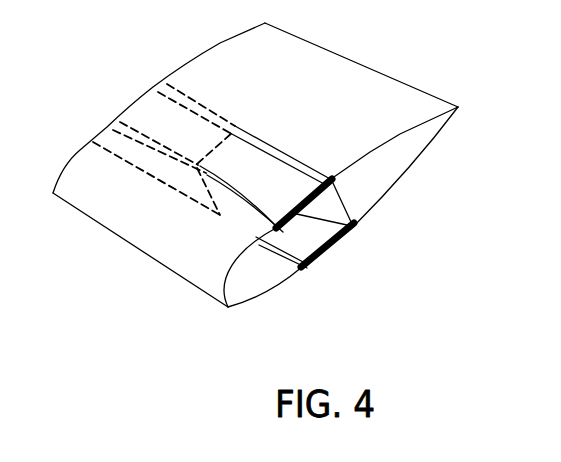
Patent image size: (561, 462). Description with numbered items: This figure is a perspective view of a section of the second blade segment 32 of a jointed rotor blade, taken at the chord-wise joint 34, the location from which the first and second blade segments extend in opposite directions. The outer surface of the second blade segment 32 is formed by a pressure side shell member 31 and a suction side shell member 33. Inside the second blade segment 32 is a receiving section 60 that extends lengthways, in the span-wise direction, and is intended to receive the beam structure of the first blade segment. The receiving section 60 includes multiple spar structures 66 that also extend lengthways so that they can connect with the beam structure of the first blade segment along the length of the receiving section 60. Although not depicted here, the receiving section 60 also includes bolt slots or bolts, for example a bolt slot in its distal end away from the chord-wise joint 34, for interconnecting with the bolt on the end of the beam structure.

The pressure side shell member 31 is at (394, 88).
The second blade segment 32 is at (326, 51).
The suction side shell member 33 is at (412, 166).
The chord-wise joint 34 is at (228, 306).
The receiving section 60 is at (311, 227).
The spar structures 66 is at (257, 140).